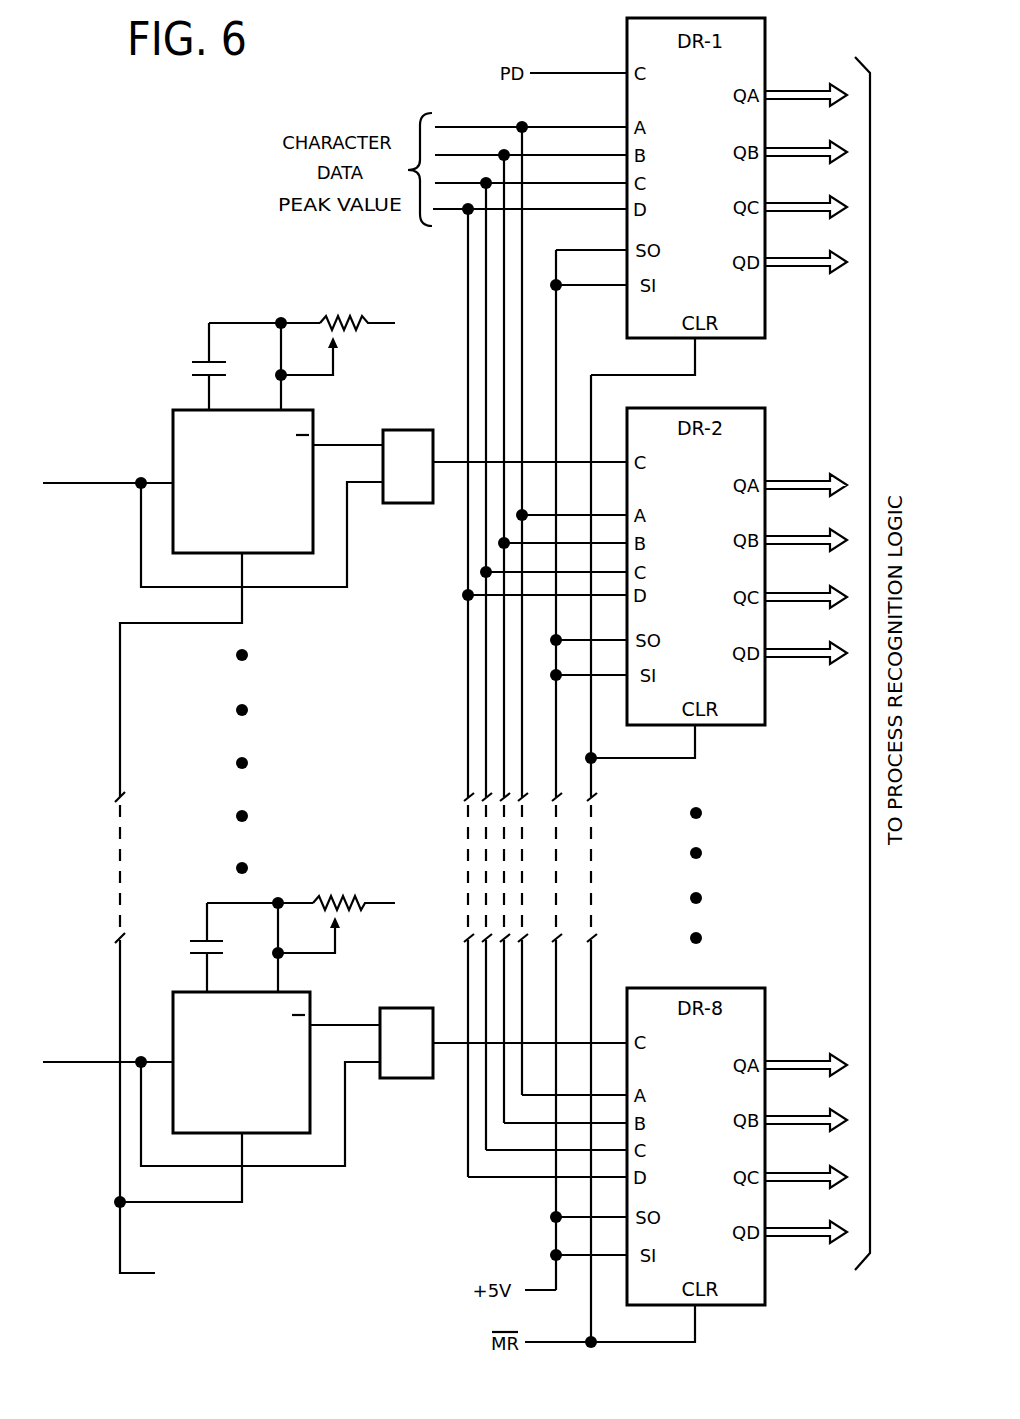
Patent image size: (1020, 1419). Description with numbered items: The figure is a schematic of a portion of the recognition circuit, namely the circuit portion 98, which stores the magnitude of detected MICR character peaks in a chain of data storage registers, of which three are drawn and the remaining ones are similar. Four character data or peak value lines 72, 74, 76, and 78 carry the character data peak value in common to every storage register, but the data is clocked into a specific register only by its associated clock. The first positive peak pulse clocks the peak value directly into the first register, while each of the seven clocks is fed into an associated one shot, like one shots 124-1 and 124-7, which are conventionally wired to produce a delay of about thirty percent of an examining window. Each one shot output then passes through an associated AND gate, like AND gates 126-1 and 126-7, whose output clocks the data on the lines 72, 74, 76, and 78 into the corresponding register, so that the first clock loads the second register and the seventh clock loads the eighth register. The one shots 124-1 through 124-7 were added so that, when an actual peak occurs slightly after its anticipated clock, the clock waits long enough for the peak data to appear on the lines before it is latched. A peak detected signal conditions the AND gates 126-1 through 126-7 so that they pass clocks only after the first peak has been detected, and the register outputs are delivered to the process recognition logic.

The circuit portion 98 is at (173, 294).
The character data peak value line 72 is at (487, 127).
The character data peak value line 74 is at (572, 154).
The character data peak value line 76 is at (556, 184).
The character data peak value line 78 is at (450, 212).
The one shot 124-1 is at (180, 425).
The AND gate 126-1 is at (428, 432).
The one shot 124-7 is at (297, 1000).
The AND gate 126-7 is at (420, 1070).